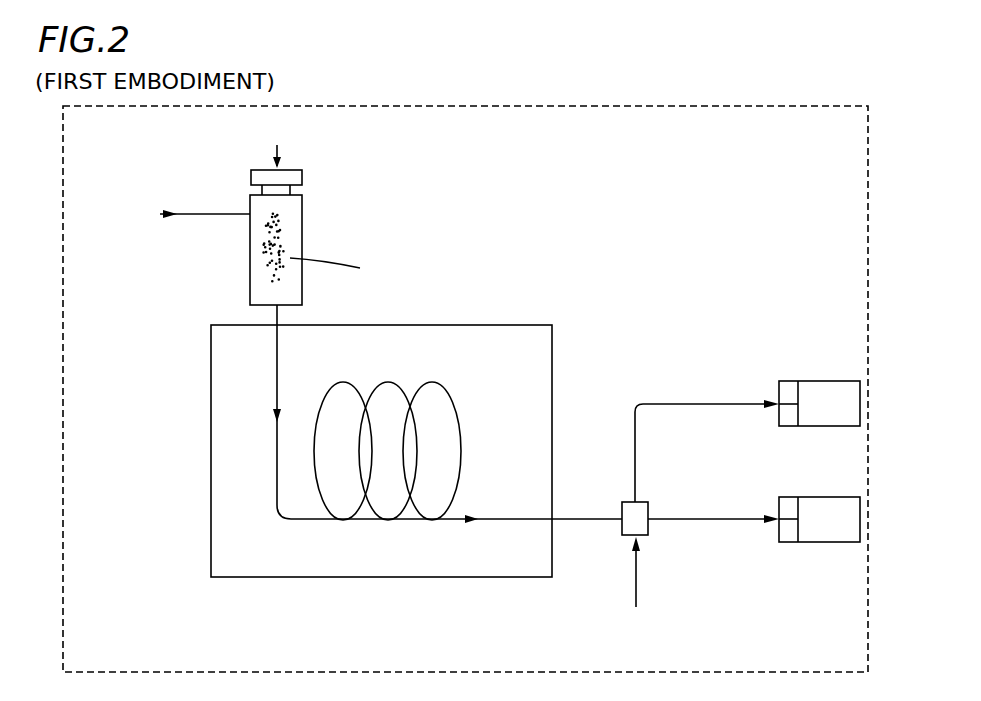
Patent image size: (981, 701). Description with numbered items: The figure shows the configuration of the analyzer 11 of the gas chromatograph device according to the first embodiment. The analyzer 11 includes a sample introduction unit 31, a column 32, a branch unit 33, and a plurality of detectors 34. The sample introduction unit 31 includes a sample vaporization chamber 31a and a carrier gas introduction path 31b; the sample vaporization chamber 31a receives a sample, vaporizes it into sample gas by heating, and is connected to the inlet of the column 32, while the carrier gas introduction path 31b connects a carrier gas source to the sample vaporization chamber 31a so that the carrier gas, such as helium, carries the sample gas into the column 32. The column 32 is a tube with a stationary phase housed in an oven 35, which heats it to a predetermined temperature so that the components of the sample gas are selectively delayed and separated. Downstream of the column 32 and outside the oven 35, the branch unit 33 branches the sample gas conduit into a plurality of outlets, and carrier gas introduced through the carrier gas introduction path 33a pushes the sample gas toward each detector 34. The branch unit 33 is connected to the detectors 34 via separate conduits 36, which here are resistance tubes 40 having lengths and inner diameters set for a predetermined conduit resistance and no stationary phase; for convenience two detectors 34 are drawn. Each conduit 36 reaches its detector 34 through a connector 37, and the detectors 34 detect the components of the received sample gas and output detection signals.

The analyzer 11 is at (740, 104).
The sample introduction unit 31 is at (330, 197).
The sample vaporization chamber 31a is at (302, 240).
The carrier gas introduction path 31b is at (211, 224).
The column 32 is at (466, 397).
The branch unit 33 is at (630, 510).
The carrier gas introduction path 33a is at (648, 572).
The detector 34 is at (832, 380).
The oven 35 is at (211, 450).
The conduit 36 is at (697, 392).
The connector 37 is at (790, 380).
The resistance tube 40 is at (707, 429).